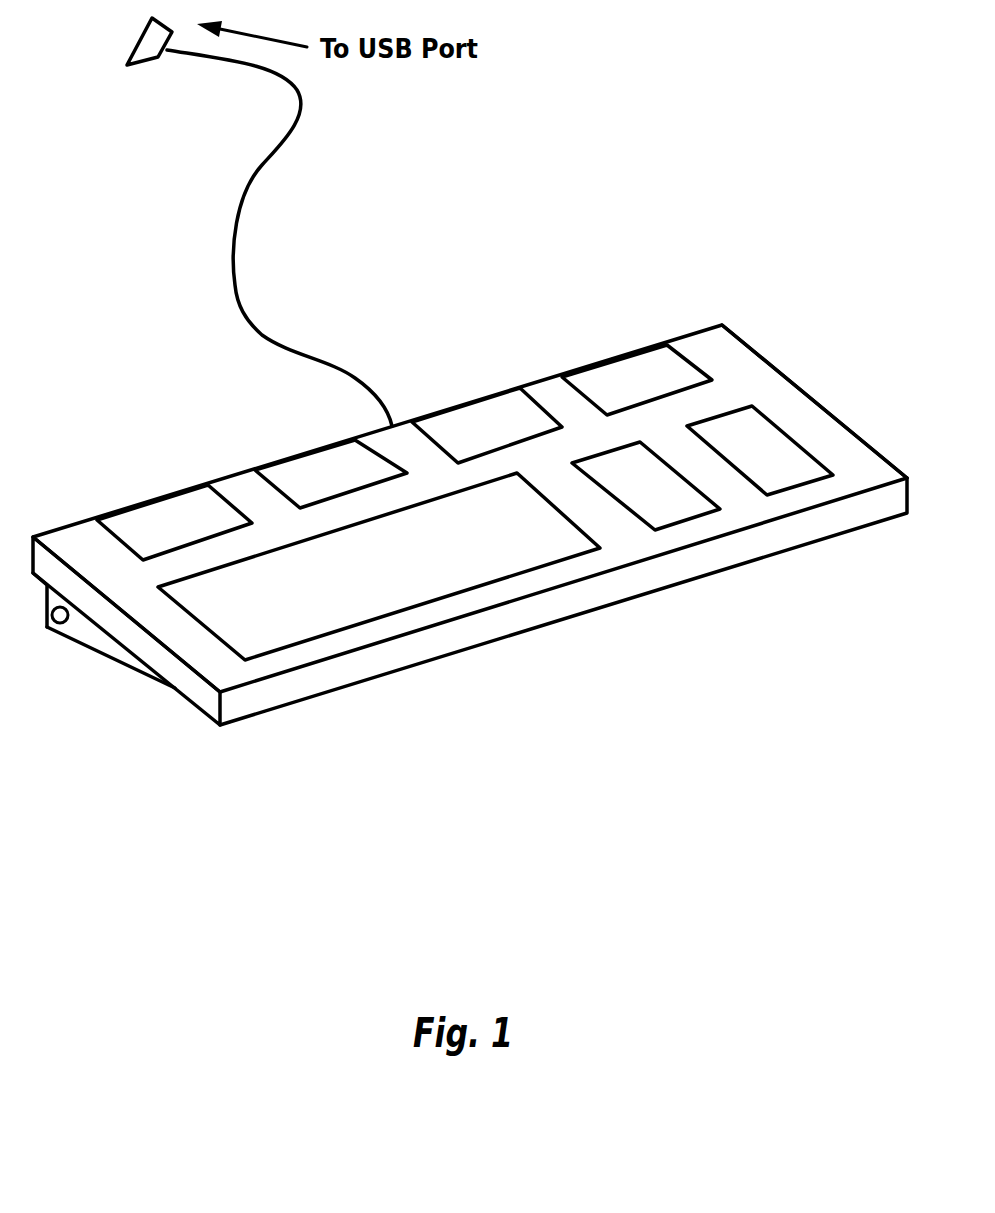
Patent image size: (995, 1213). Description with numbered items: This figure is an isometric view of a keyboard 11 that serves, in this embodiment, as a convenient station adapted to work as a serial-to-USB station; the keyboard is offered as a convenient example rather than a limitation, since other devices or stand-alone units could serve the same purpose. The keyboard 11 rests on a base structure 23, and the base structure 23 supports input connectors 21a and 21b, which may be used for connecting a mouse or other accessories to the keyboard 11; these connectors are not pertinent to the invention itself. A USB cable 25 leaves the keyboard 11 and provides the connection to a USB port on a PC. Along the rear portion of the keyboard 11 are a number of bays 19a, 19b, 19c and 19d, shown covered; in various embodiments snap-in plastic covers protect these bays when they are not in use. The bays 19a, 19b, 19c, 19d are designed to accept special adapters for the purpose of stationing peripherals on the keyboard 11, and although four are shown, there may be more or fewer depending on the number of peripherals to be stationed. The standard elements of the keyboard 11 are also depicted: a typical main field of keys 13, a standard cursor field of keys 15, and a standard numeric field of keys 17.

The keyboard 11 is at (464, 247).
The main field of keys 13 is at (307, 617).
The cursor field of keys 15 is at (675, 500).
The numeric field of keys 17 is at (790, 468).
The bay 19a is at (190, 512).
The bay 19b is at (353, 470).
The bay 19c is at (510, 427).
The bay 19d is at (652, 380).
The input connector 21a is at (58, 630).
The input connector 21b is at (799, 353).
The base structure 23 is at (124, 689).
The USB cable 25 is at (233, 276).